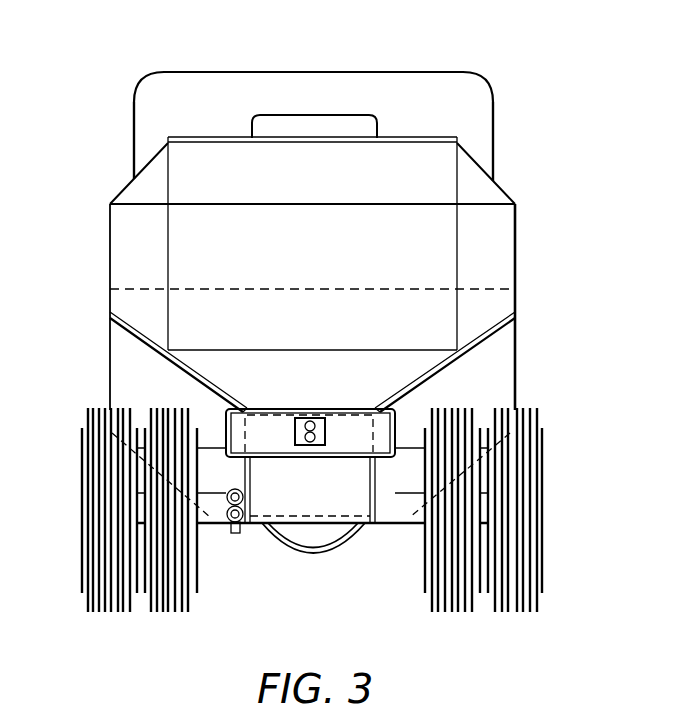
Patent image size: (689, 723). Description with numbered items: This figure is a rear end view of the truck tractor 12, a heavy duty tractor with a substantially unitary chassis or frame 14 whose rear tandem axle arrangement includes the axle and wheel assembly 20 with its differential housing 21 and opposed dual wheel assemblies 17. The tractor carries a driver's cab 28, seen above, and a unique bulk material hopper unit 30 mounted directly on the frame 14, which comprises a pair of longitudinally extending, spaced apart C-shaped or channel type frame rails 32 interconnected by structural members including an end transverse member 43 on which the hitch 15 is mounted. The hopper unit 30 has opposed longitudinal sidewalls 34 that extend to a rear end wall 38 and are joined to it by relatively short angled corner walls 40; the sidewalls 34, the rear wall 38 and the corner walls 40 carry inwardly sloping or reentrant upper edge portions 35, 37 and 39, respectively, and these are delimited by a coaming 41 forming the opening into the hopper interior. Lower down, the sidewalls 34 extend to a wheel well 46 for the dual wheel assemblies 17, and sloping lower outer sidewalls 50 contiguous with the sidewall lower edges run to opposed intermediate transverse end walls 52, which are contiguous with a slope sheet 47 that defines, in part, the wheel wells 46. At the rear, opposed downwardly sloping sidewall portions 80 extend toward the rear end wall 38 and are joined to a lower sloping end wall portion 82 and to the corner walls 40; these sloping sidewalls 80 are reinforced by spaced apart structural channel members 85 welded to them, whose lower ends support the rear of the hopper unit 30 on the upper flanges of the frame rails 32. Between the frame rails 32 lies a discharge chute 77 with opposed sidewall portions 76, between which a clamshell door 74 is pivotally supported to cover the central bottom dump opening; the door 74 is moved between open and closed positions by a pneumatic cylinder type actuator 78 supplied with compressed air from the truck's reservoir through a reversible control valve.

The truck tractor 12 is at (500, 75).
The driver's cab 28 is at (430, 72).
The coaming 41 is at (208, 138).
The hopper unit 30 is at (522, 241).
The sidewalls 34 is at (110, 262).
The reentrant upper edge portion of sidewall 35 is at (148, 164).
The reentrant upper edge portion of corner wall 39 is at (138, 194).
The reentrant upper edge portion of rear wall 37 is at (332, 184).
The rear end wall 38 is at (332, 257).
The corner walls 40 is at (153, 234).
The lower sloping end wall portion 82 is at (318, 375).
The wheel well 46 is at (148, 385).
The slope sheet 47 is at (503, 362).
The downwardly sloping sidewall portions 80 is at (152, 355).
The structural channel members 85 is at (128, 333).
The frame rails 32 is at (247, 408).
The frame 14 is at (413, 405).
The end transverse member 43 is at (273, 433).
The hitch 15 is at (327, 430).
The sidewall portions of discharge chute 76 is at (250, 483).
The pneumatic cylinder type actuator 78 is at (240, 497).
The clamshell door 74 is at (272, 523).
The discharge chute 77 is at (347, 500).
The differential housing 21 is at (305, 553).
The intermediate transverse end walls 52 is at (205, 478).
The dual wheel assemblies 17 is at (108, 407).
The axle and wheel assembly 20 is at (542, 535).
The sloping lower outer sidewalls 50 is at (105, 470).